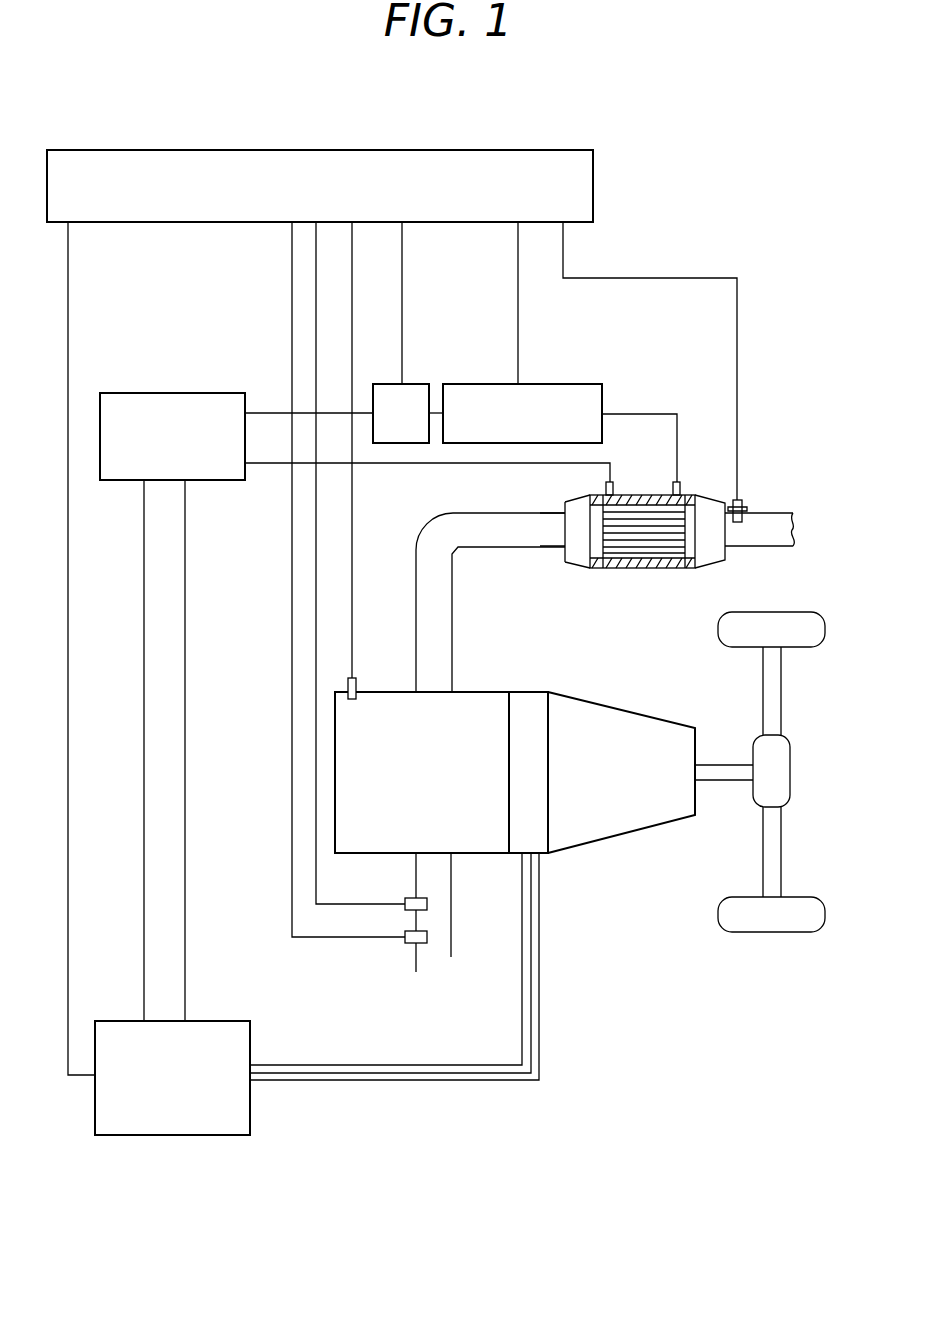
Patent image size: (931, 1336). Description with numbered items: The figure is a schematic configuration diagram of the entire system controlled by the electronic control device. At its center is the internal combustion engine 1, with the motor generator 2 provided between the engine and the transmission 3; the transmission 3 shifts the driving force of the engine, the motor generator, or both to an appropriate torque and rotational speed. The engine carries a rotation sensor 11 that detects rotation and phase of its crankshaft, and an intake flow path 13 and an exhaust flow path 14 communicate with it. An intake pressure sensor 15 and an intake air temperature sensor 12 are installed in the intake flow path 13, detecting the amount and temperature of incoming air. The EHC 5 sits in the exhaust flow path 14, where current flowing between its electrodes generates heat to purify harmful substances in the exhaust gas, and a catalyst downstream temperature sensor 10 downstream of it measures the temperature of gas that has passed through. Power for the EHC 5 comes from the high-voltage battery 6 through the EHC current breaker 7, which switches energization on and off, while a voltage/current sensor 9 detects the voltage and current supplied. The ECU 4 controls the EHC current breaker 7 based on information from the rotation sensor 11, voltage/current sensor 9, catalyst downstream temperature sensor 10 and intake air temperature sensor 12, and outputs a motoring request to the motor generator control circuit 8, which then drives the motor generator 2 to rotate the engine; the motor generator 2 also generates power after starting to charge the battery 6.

The internal combustion engine 1 is at (475, 691).
The motor generator 2 is at (525, 691).
The transmission 3 is at (607, 700).
The electronic control unit (ECU) 4 is at (321, 149).
The EHC 5 is at (647, 552).
The battery 6 is at (172, 392).
The EHC current breaker 7 is at (550, 384).
The motor generator control circuit 8 is at (214, 1020).
The voltage/current sensor 9 is at (417, 384).
The catalyst downstream temperature sensor 10 is at (741, 498).
The rotation sensor 11 is at (372, 654).
The intake air temperature sensor 12 is at (405, 896).
The intake flow path 13 is at (437, 957).
The exhaust flow path 14 is at (443, 623).
The intake pressure sensor 15 is at (410, 946).